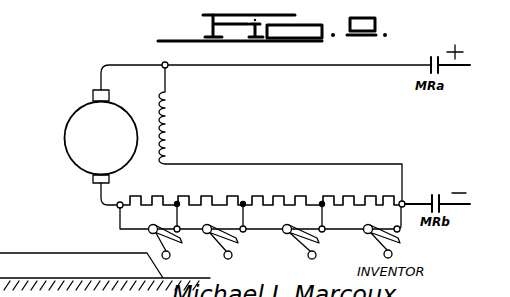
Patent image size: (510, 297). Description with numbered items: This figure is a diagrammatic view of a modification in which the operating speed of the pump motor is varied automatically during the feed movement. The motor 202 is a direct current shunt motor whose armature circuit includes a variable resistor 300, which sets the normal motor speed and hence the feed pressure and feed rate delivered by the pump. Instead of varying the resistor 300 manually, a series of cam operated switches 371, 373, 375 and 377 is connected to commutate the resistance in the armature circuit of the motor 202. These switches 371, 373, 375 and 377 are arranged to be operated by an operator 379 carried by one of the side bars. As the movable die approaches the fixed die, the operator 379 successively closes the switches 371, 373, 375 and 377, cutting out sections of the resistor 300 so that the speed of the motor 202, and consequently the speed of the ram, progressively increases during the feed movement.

The motor 202 is at (112, 149).
The variable resistor 300 is at (200, 197).
The switch 371 is at (179, 240).
The switch 373 is at (237, 241).
The switch 375 is at (318, 241).
The switch 377 is at (400, 243).
The operator 379 is at (60, 253).